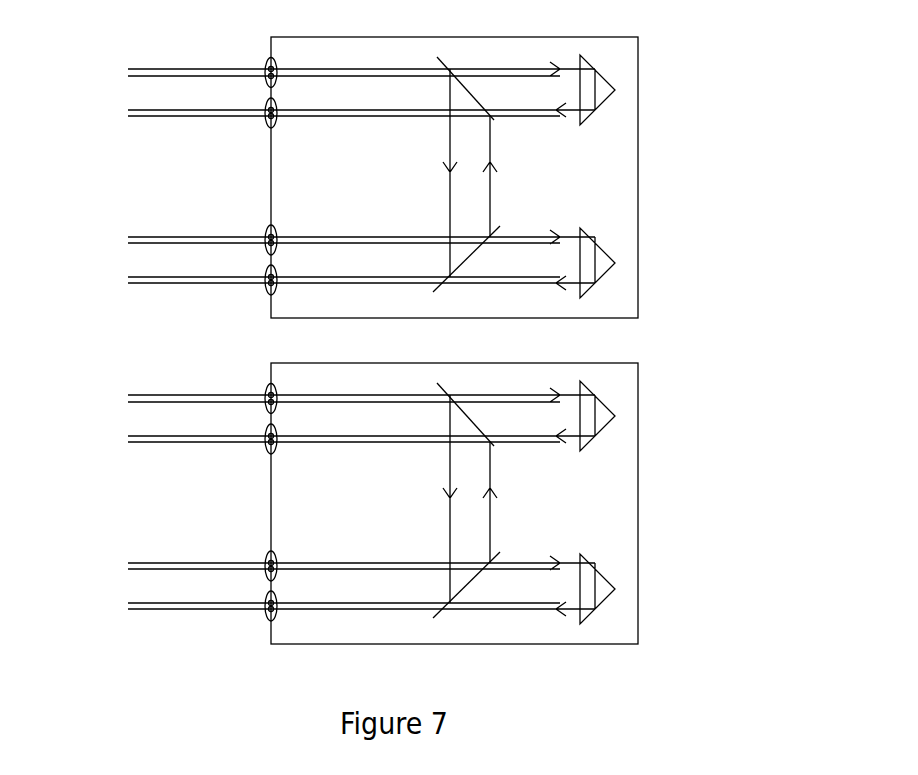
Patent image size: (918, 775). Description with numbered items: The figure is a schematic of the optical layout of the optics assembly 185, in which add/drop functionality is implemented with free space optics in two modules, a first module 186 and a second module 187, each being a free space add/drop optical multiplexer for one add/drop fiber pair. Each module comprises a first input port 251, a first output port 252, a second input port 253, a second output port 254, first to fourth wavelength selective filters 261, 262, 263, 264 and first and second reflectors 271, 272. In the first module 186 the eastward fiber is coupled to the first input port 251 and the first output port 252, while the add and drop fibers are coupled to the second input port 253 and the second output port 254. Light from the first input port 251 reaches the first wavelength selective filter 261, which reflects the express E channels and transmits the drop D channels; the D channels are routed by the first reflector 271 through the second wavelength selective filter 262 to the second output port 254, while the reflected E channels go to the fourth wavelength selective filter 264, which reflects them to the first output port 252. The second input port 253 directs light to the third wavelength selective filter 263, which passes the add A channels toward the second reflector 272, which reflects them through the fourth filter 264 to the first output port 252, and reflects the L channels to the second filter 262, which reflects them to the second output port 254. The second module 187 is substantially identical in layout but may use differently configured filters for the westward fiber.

The optics assembly 185 is at (662, 40).
The first module 186 is at (320, 37).
The second module 187 is at (322, 647).
The first input port 251 is at (267, 60).
The first output port 252 is at (267, 290).
The second input port 253 is at (267, 230).
The second output port 254 is at (267, 124).
The first wavelength selective filter 261 is at (438, 58).
The second wavelength selective filter 262 is at (497, 122).
The third wavelength selective filter 263 is at (500, 232).
The fourth wavelength selective filter 264 is at (433, 292).
The first reflector 271 is at (598, 68).
The second reflector 272 is at (607, 268).